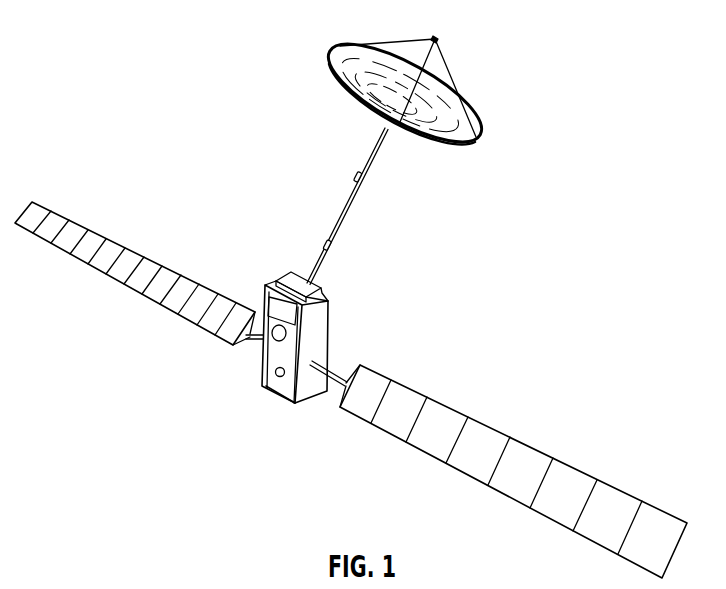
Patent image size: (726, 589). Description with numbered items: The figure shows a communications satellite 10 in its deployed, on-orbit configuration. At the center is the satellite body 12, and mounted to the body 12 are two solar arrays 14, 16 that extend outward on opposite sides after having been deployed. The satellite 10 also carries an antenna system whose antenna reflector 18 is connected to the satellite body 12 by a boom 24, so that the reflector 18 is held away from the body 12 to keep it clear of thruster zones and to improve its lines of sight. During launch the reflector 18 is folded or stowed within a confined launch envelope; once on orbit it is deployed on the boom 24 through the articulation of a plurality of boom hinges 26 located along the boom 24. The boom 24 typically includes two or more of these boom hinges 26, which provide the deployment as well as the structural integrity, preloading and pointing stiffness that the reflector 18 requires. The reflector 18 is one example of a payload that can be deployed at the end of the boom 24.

The communications satellite 10 is at (631, 168).
The satellite body 12 is at (322, 335).
The solar array 14 is at (114, 281).
The solar array 16 is at (535, 448).
The antenna reflector 18 is at (452, 149).
The boom 24 is at (319, 264).
The boom hinge 26 is at (354, 177).